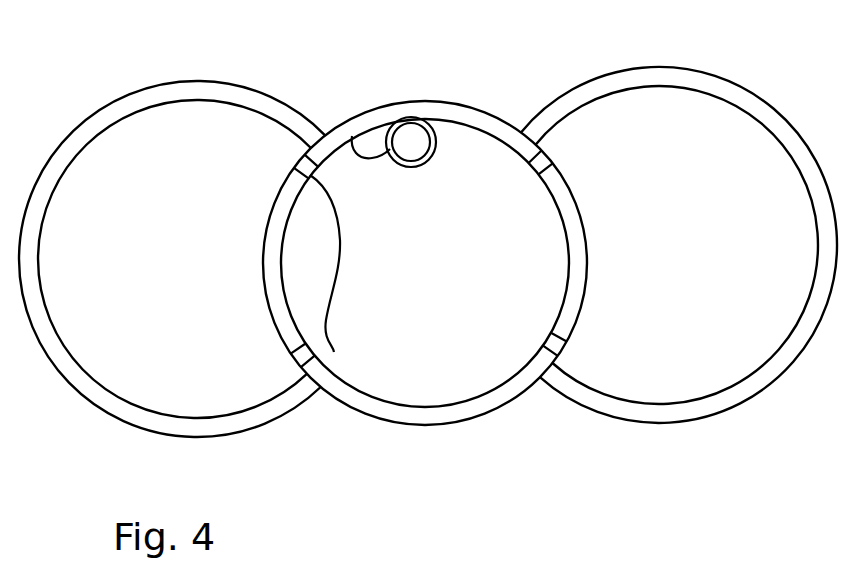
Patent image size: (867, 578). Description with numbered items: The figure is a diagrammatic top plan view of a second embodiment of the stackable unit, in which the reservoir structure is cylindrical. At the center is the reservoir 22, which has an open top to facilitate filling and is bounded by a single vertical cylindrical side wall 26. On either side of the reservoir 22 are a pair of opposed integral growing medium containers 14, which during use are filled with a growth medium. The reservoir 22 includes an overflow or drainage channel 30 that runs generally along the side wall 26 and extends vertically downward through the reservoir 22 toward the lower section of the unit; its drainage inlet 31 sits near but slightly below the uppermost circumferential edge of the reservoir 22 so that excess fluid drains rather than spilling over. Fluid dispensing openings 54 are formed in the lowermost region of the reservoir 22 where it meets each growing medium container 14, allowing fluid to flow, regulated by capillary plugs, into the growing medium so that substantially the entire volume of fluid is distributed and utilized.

The growing medium containers 14 is at (200, 81).
The reservoir 22 is at (425, 263).
The side wall 26 is at (458, 421).
The drainage channel 30 is at (348, 146).
The drainage inlet 31 is at (415, 137).
The fluid dispensing openings 54 is at (310, 361).